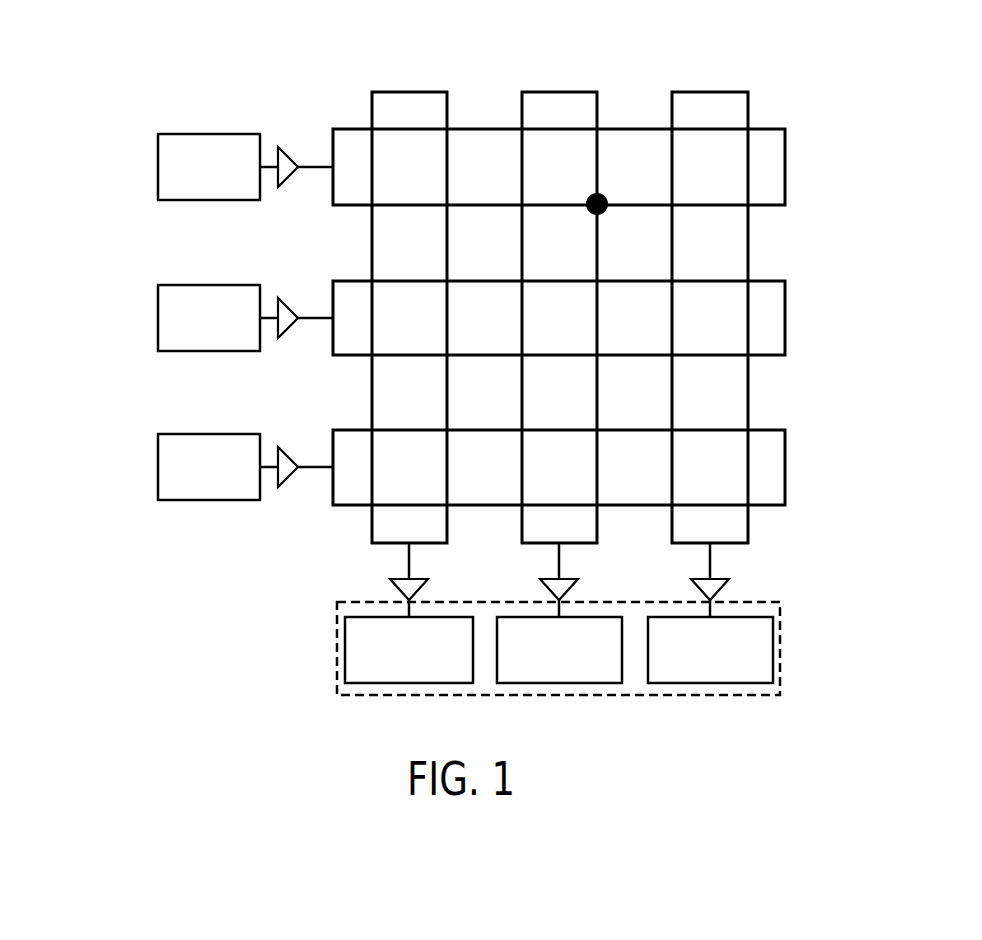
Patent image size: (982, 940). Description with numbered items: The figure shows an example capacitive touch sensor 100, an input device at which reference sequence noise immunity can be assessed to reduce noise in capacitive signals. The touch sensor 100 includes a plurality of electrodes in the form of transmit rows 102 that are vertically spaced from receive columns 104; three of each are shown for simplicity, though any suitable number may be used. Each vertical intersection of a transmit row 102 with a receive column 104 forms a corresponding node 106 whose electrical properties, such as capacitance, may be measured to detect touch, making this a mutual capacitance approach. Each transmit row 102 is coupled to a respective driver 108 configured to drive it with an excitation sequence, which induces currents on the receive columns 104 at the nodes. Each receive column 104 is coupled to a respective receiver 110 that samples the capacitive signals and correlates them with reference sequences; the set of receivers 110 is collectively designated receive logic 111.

The capacitive touch sensor 100 is at (462, 355).
The transmit rows 102 is at (824, 170).
The receive columns 104 is at (410, 57).
The node 106 is at (602, 212).
The driver 108 is at (226, 192).
The receiver 110 is at (426, 676).
The receive logic 111 is at (780, 602).